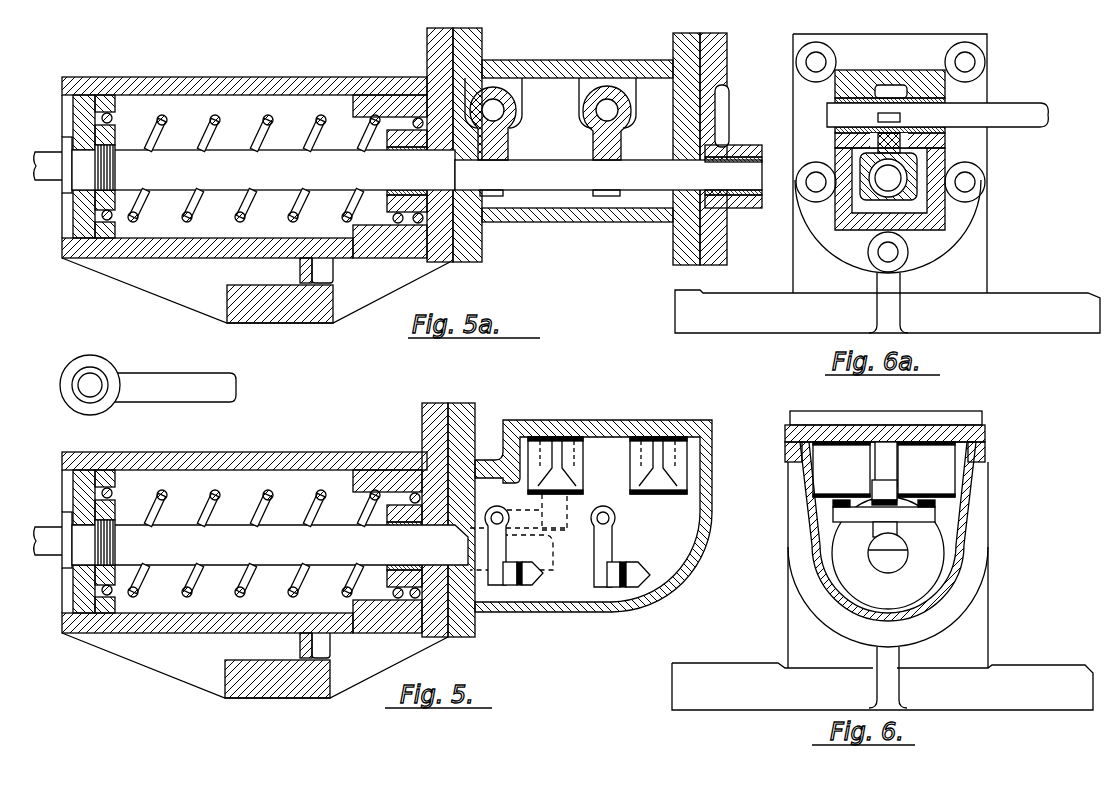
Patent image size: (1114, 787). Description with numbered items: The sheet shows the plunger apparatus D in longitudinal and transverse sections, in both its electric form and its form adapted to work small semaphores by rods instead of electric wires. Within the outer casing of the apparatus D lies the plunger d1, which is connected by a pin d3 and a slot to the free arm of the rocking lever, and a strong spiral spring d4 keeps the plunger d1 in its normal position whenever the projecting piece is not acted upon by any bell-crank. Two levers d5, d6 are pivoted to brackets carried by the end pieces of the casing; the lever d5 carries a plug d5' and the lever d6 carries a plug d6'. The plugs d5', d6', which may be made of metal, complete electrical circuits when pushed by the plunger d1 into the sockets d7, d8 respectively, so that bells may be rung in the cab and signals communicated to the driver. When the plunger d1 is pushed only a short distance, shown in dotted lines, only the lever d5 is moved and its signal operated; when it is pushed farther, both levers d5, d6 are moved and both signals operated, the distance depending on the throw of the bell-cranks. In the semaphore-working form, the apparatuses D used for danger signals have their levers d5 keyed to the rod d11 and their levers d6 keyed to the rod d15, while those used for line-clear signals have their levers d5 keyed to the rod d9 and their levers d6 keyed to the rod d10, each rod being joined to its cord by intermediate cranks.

In FIG. 5A, the plunger apparatus D is at (597, 156).
In FIG. 6A, the plunger apparatus D is at (887, 183).
In FIG. 5, the plunger apparatus D is at (593, 536).
In FIG. 6, the plunger apparatus D is at (882, 560).
In FIG. 5A, the plunger d1 is at (398, 176).
In FIG. 6, the plunger d1 is at (890, 562).
In FIG. 5, the pin d3 is at (88, 383).
In FIG. 5A, the spiral spring d4 is at (272, 121).
In FIG. 5, the spiral spring d4 is at (261, 534).
In FIG. 5A, the pivoted lever d5 is at (522, 125).
In FIG. 6A, the pivoted lever d5 is at (836, 159).
In FIG. 5, the pivoted lever d5 is at (522, 585).
In FIG. 6, the pivoted lever d5 is at (944, 531).
In FIG. 5, the plug d5' is at (538, 609).
In FIG. 6, the plug d5' is at (946, 483).
In FIG. 5A, the pivoted lever d6 is at (641, 127).
In FIG. 5, the pivoted lever d6 is at (660, 559).
In FIG. 5, the plug d6' is at (660, 587).
In FIG. 5, the socket d7 is at (560, 463).
In FIG. 6, the socket d7 is at (885, 467).
In FIG. 5, the socket d8 is at (668, 452).
In FIG. 5A, the rod d9 is at (528, 107).
In FIG. 6A, the rod d9 is at (999, 123).
In FIG. 5A, the rod d10 is at (648, 107).
In FIG. 5A, the rod d11 is at (528, 114).
In FIG. 5A, the rod d15 is at (610, 110).